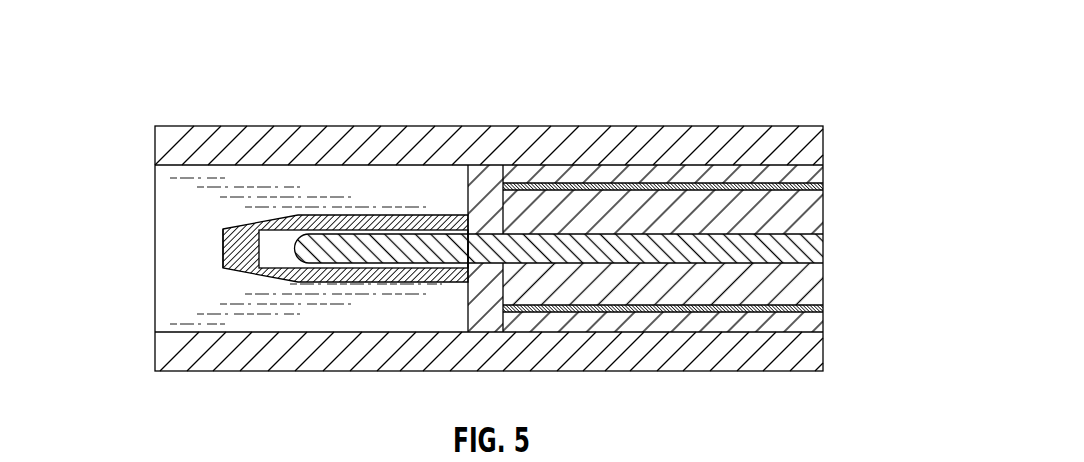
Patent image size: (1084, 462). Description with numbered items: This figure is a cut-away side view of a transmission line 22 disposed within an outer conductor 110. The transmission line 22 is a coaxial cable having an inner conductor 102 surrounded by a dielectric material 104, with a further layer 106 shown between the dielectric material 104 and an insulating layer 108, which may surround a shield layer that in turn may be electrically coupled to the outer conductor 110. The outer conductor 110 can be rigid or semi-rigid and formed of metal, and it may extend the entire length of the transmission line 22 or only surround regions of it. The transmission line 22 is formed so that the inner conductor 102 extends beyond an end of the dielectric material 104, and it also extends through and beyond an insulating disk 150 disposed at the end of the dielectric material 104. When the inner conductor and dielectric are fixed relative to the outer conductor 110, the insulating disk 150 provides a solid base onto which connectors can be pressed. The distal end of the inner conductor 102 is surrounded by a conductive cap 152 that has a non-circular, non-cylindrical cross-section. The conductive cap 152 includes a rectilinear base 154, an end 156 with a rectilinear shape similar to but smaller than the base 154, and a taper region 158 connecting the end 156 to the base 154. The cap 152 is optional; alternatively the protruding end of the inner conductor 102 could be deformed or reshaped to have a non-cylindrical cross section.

The transmission line 22 is at (680, 152).
The inner conductor 102 is at (823, 243).
The dielectric material 104 is at (823, 290).
The upper cladding layer 106 is at (823, 185).
The insulating layer 108 is at (772, 170).
The outer conductor 110 is at (372, 146).
The insulating disk 150 is at (483, 176).
The conductive cap 152 is at (297, 210).
The rectilinear base 154 is at (335, 273).
The end 156 is at (222, 251).
The taper region 158 is at (233, 270).